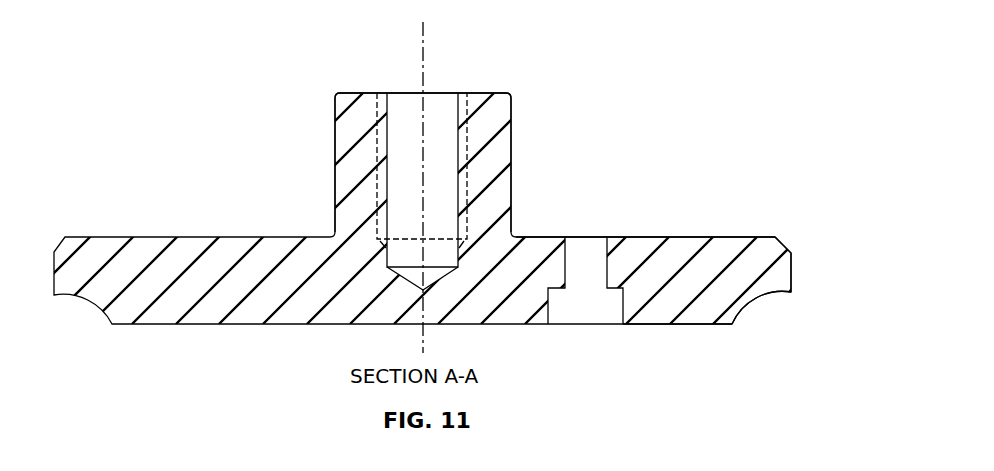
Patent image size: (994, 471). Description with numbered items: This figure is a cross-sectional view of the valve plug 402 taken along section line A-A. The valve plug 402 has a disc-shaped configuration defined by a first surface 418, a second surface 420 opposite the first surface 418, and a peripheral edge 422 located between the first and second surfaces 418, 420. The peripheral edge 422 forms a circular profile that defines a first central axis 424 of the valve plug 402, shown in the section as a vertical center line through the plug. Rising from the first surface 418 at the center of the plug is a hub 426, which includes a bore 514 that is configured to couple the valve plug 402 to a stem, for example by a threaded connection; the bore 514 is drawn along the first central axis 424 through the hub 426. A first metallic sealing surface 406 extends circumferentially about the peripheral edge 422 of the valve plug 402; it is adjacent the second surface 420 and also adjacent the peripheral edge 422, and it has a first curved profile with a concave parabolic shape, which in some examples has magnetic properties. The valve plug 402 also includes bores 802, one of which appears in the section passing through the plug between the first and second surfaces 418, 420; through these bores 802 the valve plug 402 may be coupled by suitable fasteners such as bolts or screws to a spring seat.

The valve plug 402 is at (675, 93).
The first metallic sealing surface 406 is at (750, 308).
The first surface 418 is at (747, 237).
The second surface 420 is at (712, 325).
The peripheral edge 422 is at (793, 265).
The first central axis 424 is at (425, 48).
The hub 426 is at (490, 158).
The bore 514 is at (438, 112).
The bores 802 is at (587, 252).